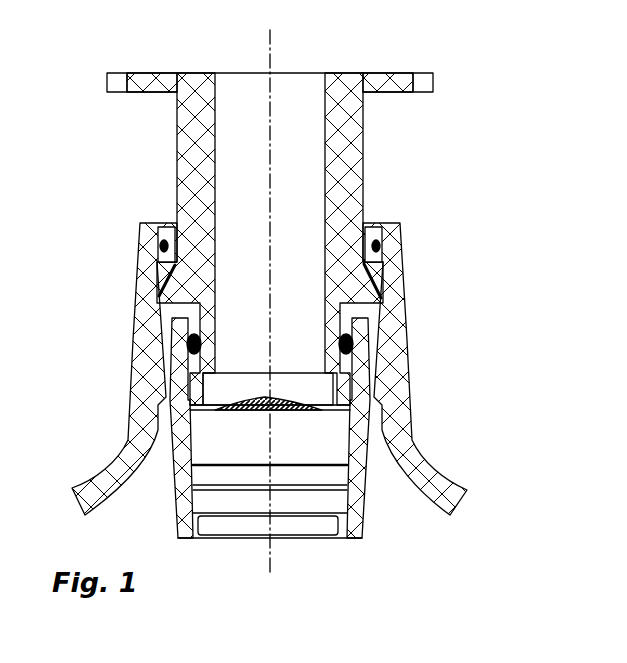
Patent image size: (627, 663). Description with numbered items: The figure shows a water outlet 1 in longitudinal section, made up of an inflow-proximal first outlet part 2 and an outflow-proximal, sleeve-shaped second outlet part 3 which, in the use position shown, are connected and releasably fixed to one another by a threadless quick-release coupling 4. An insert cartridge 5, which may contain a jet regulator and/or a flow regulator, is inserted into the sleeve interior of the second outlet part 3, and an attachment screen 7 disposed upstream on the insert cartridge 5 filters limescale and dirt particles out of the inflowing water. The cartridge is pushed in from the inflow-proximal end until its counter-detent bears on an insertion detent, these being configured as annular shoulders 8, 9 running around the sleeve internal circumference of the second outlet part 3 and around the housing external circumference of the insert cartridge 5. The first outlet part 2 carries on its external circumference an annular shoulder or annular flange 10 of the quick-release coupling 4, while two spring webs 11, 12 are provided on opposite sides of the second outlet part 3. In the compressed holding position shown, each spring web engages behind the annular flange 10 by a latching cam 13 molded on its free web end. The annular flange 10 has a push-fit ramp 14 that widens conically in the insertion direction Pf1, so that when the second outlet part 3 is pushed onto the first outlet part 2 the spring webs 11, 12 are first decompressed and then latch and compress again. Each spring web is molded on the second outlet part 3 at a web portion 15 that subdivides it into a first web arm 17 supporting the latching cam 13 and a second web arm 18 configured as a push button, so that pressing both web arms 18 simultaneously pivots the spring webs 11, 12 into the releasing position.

The water outlet 1 is at (492, 102).
The first outlet part 2 is at (350, 172).
The second outlet part 3 is at (388, 385).
The quick-release coupling 4 is at (456, 238).
The insert cartridge 5 is at (328, 455).
The attachment screen 7 is at (284, 394).
The annular shoulder 8 is at (198, 483).
The annular shoulder 9 is at (348, 496).
The annular flange 10 is at (376, 272).
The spring web 11 is at (428, 395).
The spring web 12 is at (104, 338).
The latching cam 13 is at (162, 226).
The push-fit ramp 14 is at (160, 292).
The web portion 15 is at (162, 398).
The first web arm 17 is at (390, 328).
The second web arm 18 is at (445, 478).
The insertion direction Pf1 is at (433, 532).